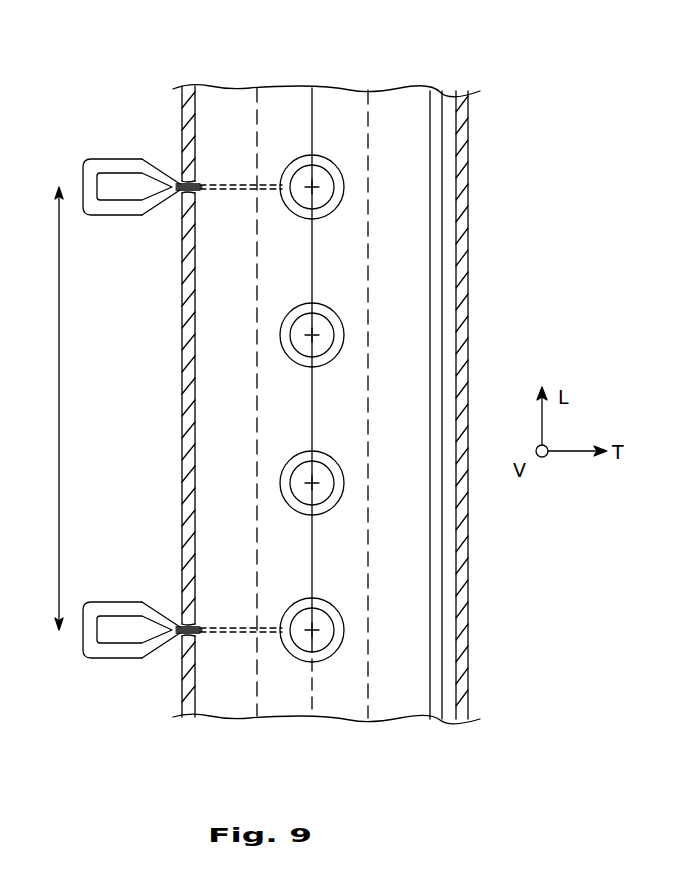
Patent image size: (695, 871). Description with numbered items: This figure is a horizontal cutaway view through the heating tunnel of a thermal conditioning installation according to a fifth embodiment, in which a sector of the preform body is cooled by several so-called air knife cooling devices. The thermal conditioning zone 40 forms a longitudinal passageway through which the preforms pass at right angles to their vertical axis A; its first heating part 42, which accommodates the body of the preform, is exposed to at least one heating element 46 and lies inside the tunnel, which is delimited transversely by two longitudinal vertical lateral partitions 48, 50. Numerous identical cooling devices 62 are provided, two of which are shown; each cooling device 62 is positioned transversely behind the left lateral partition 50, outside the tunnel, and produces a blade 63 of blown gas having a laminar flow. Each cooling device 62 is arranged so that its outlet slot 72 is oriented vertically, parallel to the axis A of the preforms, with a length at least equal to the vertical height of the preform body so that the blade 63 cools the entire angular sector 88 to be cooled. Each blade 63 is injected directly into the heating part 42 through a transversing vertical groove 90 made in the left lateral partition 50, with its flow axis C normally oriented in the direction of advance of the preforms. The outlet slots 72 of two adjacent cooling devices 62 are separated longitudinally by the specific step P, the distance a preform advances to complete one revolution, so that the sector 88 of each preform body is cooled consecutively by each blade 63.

The thermal conditioning zone 40 is at (258, 118).
The first heating part 42 is at (312, 403).
The heating element 46 is at (437, 164).
The lateral partition 48 is at (464, 188).
The left lateral partition 50 is at (183, 357).
The cooling device 62 is at (88, 175).
The blade of blown gas 63 is at (228, 182).
The outlet slot 72 is at (180, 192).
The angular sector 88 is at (281, 183).
The transversing vertical groove 90 is at (180, 183).
The vertical axis A is at (318, 182).
The flow axis C is at (248, 191).
The step P is at (46, 408).